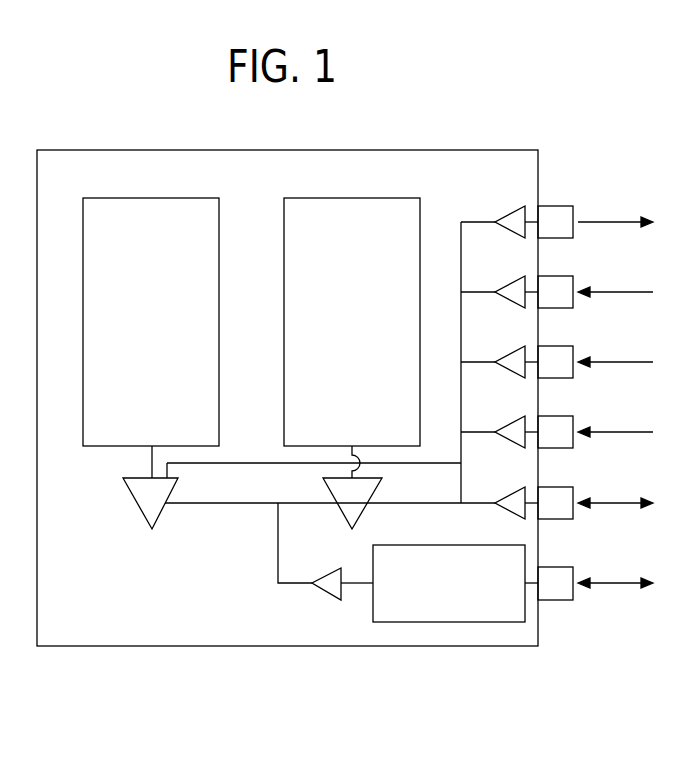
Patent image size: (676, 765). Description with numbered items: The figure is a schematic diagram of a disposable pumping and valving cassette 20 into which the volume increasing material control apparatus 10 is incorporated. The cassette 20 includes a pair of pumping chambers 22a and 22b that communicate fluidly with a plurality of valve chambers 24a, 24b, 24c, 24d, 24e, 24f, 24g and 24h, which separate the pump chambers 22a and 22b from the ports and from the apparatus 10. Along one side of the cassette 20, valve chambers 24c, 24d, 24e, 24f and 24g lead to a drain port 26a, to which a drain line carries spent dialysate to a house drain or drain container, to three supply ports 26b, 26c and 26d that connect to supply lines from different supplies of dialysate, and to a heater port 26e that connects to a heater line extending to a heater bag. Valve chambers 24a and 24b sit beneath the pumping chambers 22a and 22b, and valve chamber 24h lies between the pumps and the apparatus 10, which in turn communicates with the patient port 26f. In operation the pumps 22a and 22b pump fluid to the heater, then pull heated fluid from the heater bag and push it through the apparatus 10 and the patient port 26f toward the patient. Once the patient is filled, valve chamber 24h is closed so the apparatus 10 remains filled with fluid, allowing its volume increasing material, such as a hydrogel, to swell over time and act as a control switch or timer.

The disposable pumping and valving cassette 20 is at (60, 150).
The volume increasing material control apparatus 10 is at (437, 595).
The pumping chamber 22a is at (170, 347).
The pumping chamber 22b is at (370, 347).
The valve chamber 24a is at (143, 511).
The valve chamber 24b is at (360, 511).
The valve chamber 24c is at (509, 212).
The valve chamber 24d is at (509, 282).
The valve chamber 24e is at (509, 352).
The valve chamber 24f is at (509, 422).
The valve chamber 24g is at (509, 492).
The valve chamber 24h is at (327, 573).
The drain port 26a is at (573, 212).
The supply port 26b is at (573, 282).
The supply port 26c is at (573, 352).
The supply port 26d is at (573, 422).
The heater port 26e is at (573, 492).
The patient port 26f is at (573, 572).